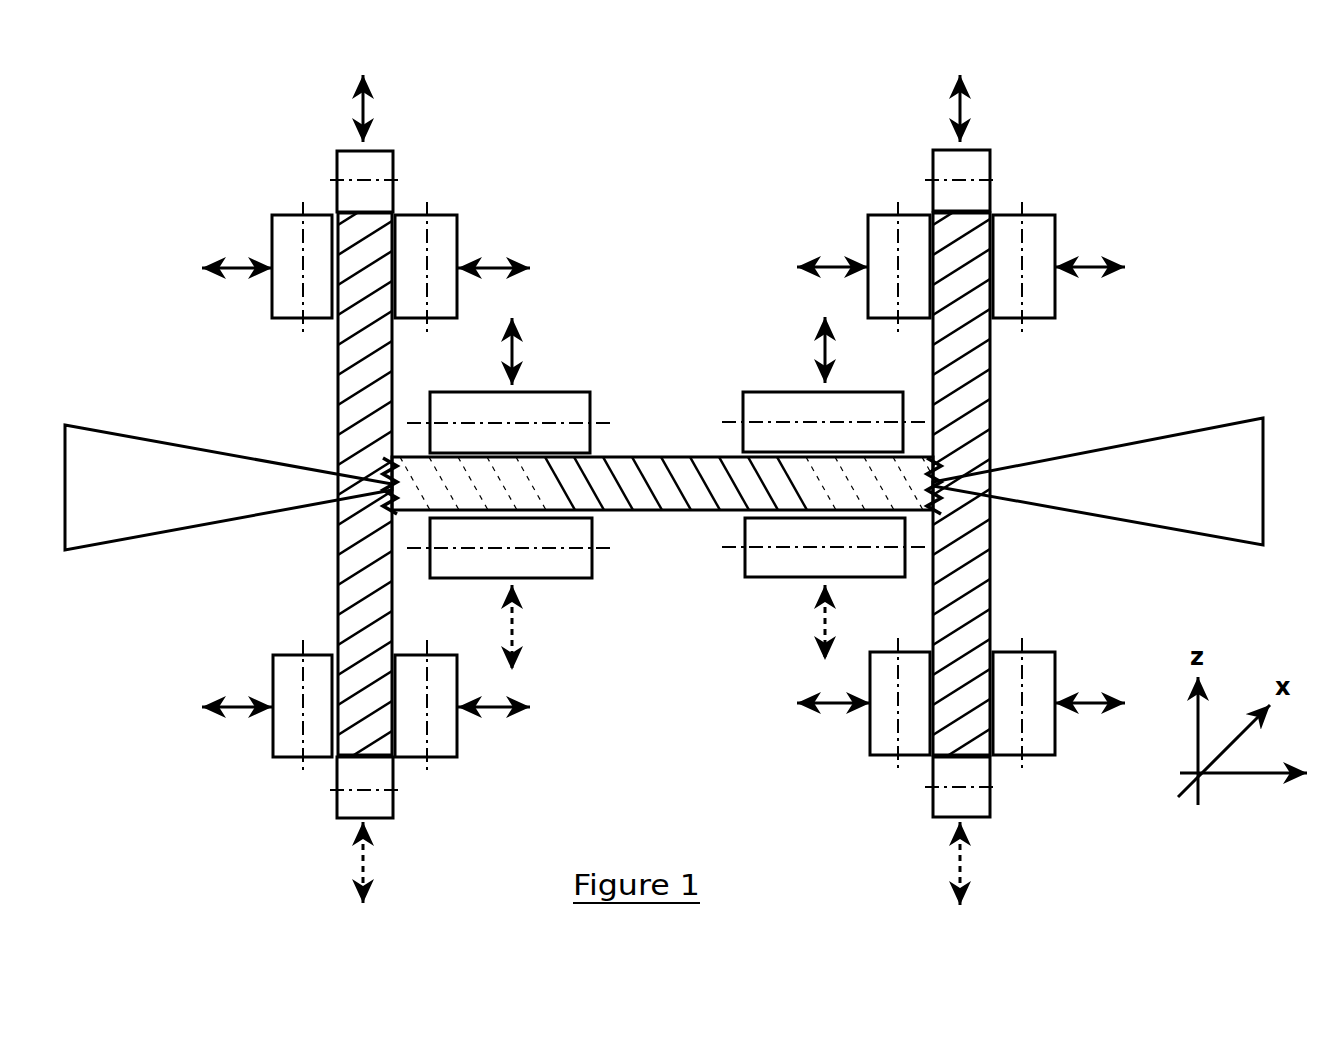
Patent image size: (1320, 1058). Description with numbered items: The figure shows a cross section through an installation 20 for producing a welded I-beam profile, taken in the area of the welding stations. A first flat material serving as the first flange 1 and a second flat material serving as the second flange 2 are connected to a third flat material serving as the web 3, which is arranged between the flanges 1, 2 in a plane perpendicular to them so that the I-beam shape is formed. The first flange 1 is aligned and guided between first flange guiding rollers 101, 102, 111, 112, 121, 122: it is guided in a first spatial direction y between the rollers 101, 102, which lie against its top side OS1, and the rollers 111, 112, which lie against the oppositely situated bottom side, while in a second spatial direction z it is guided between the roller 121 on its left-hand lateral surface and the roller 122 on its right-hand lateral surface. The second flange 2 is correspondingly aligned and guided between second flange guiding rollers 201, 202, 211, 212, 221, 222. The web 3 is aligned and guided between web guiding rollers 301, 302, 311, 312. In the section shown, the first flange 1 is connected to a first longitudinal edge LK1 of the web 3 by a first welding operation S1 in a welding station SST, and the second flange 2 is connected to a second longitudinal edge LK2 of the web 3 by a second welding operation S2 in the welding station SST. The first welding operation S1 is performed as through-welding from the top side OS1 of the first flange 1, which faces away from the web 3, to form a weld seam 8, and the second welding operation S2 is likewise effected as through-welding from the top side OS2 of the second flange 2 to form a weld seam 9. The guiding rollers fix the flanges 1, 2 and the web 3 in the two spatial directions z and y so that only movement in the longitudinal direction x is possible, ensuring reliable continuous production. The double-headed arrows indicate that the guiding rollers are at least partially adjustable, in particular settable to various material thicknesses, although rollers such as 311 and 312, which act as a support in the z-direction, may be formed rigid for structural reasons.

The first flange 1 is at (338, 378).
The second flange 2 is at (990, 378).
The web 3 is at (653, 457).
The weld seam 8 is at (380, 478).
The weld seam 9 is at (950, 473).
The installation 20 is at (1150, 127).
The first flange guiding roller 101 is at (273, 212).
The first flange guiding roller 111 is at (457, 213).
The first flange guiding roller 102 is at (273, 757).
The first flange guiding roller 112 is at (457, 757).
The first flange guiding roller 121 is at (337, 150).
The first flange guiding roller 122 is at (393, 818).
The second flange guiding roller 201 is at (868, 213).
The second flange guiding roller 211 is at (1052, 213).
The second flange guiding roller 202 is at (870, 755).
The second flange guiding roller 212 is at (1055, 755).
The second flange guiding roller 221 is at (933, 150).
The second flange guiding roller 222 is at (990, 817).
The web guiding roller 301 is at (545, 392).
The web guiding roller 302 is at (797, 392).
The web guiding roller 311 is at (573, 578).
The web guiding roller 312 is at (745, 577).
The first welding operation S1 is at (178, 503).
The second welding operation S2 is at (1195, 500).
The welding station SST is at (175, 388).
The top side of the first flange OS1 is at (336, 568).
The top side of the second flange OS2 is at (992, 580).
The first longitudinal edge LK1 is at (430, 485).
The second longitudinal edge LK2 is at (917, 485).